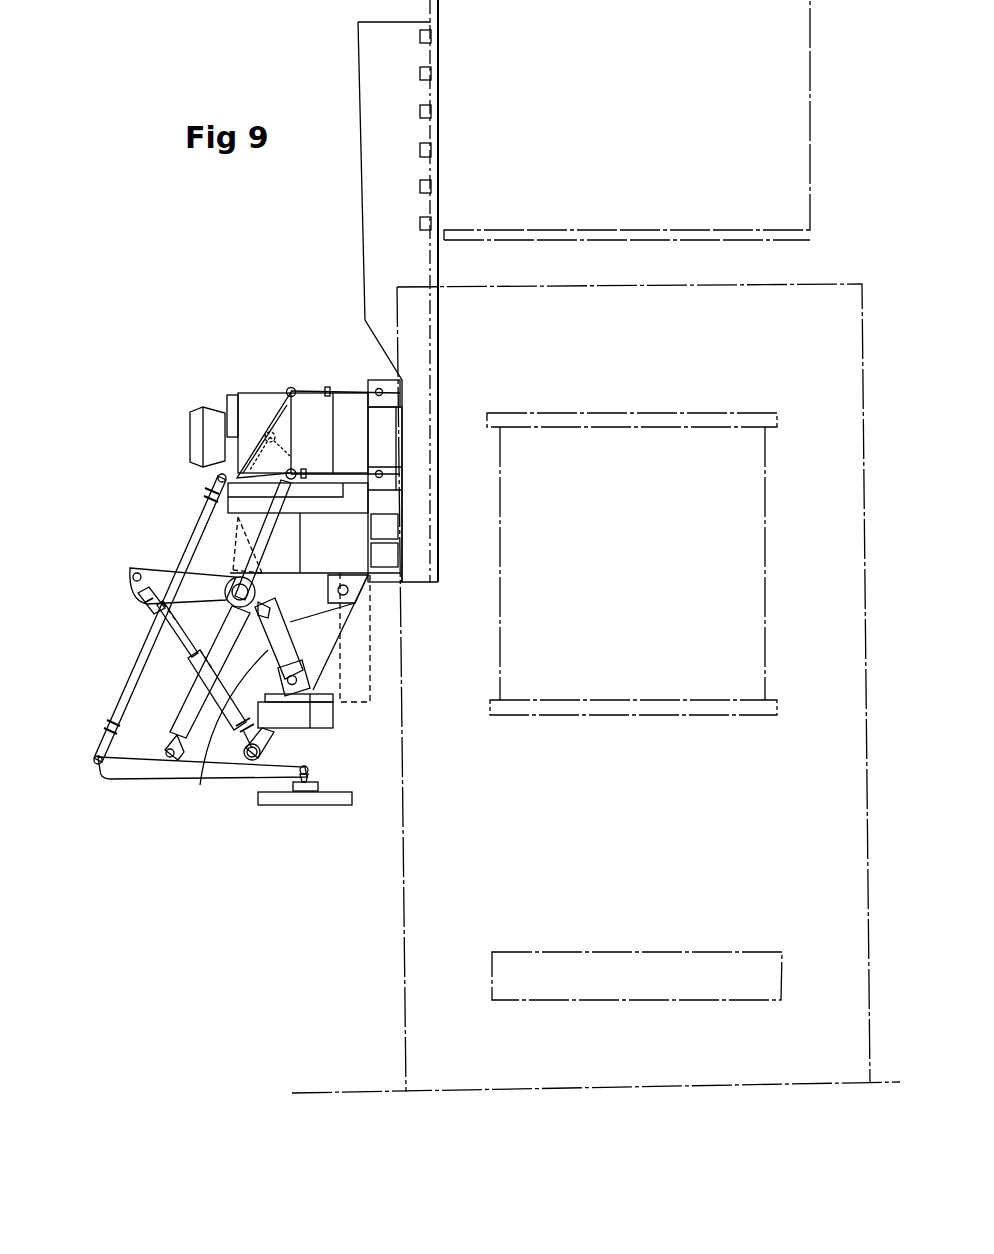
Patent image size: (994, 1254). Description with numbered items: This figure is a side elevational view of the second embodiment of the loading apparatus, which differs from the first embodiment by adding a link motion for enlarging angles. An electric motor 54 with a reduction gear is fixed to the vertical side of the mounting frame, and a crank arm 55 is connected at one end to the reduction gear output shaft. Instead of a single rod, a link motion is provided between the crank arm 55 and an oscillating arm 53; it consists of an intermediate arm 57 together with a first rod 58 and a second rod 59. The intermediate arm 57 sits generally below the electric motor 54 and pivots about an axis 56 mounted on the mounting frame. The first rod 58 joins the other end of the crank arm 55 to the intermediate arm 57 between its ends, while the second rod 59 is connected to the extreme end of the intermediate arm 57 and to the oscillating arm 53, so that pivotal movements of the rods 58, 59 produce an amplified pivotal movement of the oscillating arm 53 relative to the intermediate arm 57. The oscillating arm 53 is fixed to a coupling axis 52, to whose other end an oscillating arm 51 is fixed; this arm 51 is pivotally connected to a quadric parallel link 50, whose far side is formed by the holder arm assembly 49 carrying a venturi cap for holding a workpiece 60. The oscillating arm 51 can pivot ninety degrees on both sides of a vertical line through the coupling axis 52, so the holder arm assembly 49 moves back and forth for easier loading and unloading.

The holder arm assembly 49 is at (215, 773).
The quadric parallel link 50 is at (126, 703).
The oscillating arm 51 is at (183, 762).
The coupling axis 52 is at (317, 672).
The oscillating arm 53 is at (260, 763).
The electric motor 54 is at (269, 400).
The crank arm 55 is at (252, 438).
The axis 56 is at (349, 591).
The intermediate arm 57 is at (150, 572).
The first rod 58 is at (232, 525).
The second rod 59 is at (182, 647).
The workpiece 60 is at (322, 802).